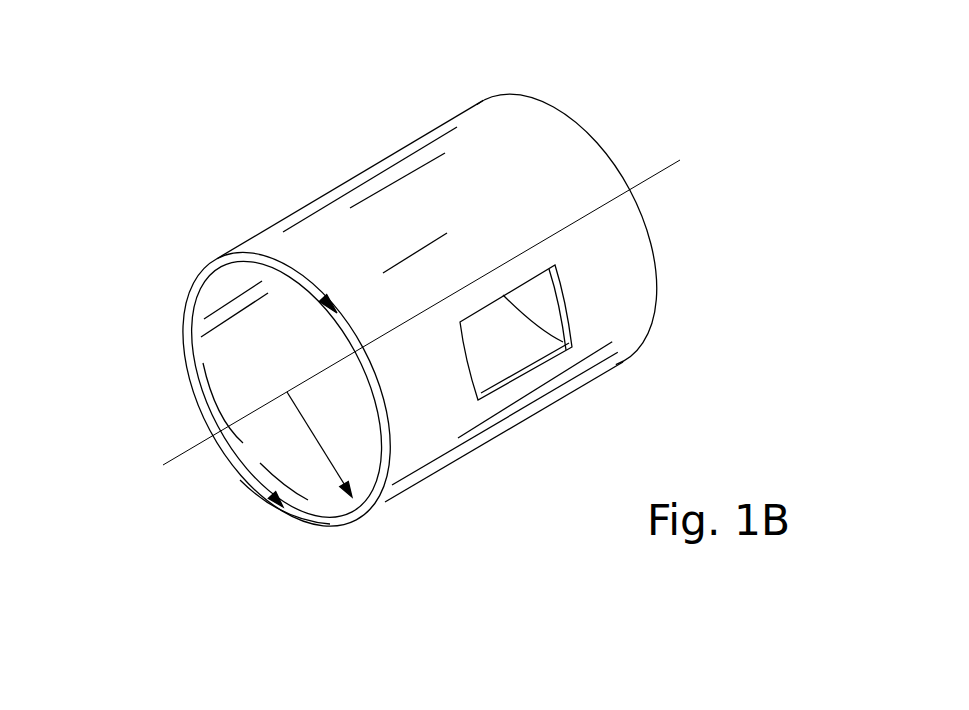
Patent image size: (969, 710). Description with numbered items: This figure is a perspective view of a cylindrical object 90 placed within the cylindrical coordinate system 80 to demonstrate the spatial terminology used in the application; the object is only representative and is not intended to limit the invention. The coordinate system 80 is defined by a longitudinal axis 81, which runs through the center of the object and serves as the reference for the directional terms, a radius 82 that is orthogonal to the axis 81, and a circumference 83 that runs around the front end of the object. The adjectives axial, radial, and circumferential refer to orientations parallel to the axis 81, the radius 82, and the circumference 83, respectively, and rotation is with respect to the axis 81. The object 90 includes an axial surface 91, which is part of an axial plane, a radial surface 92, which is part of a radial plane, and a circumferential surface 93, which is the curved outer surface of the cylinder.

The cylindrical coordinate system 80 is at (592, 113).
The longitudinal axis 81 is at (173, 458).
The radius 82 is at (327, 450).
The circumference 83 is at (192, 288).
The cylindrical object 90 is at (458, 102).
The axial surface 91 is at (545, 345).
The radial surface 92 is at (305, 512).
The circumferential surface 93 is at (397, 203).